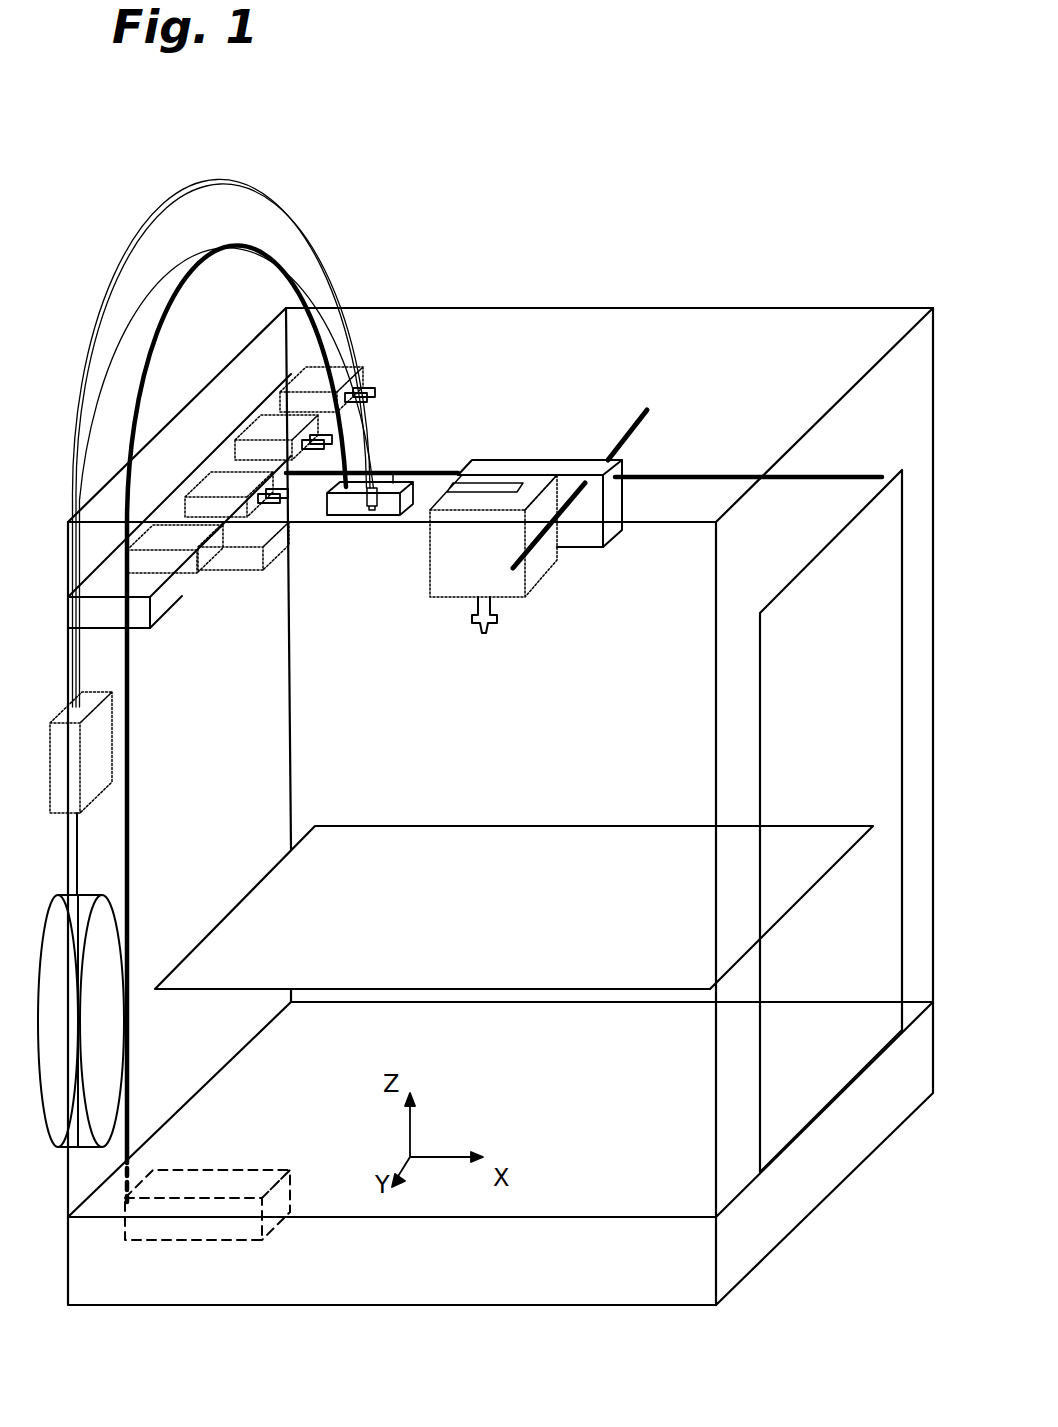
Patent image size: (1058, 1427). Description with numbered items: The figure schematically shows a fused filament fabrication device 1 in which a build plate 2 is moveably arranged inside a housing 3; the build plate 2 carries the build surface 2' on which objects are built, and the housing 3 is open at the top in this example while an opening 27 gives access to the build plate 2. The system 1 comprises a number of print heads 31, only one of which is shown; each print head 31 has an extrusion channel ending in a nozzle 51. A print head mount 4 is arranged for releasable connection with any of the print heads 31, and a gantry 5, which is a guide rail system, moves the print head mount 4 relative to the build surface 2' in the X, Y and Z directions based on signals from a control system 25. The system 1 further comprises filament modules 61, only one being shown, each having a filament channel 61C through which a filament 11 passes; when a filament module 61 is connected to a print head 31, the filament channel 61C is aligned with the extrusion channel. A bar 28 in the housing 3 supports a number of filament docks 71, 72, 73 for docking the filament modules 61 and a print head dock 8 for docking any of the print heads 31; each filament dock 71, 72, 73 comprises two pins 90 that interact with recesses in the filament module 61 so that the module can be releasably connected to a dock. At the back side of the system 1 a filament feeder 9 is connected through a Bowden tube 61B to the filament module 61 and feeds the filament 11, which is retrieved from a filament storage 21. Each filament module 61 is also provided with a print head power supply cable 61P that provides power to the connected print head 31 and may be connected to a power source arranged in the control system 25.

The fused filament fabrication device 1 is at (440, 230).
The build plate 2 is at (514, 973).
The build surface 2' is at (617, 839).
The housing 3 is at (866, 307).
The print head mount 4 is at (548, 460).
The gantry 5 is at (640, 425).
The print head dock 8 is at (163, 543).
The filament feeder 9 is at (103, 743).
The filament 11 is at (80, 858).
The filament storage 21 is at (112, 924).
The control system 25 is at (253, 1187).
The opening 27 is at (765, 712).
The bar 28 is at (160, 598).
The print head 31 is at (433, 565).
The nozzle 51 is at (483, 633).
The filament module 61 is at (393, 485).
The Bowden tube 61B is at (172, 203).
The filament channel 61C is at (375, 505).
The print head power supply cable 61P is at (147, 328).
The filament dock 71 is at (300, 380).
The filament dock 72 is at (270, 425).
The filament dock 73 is at (222, 472).
The pins 90 is at (363, 363).